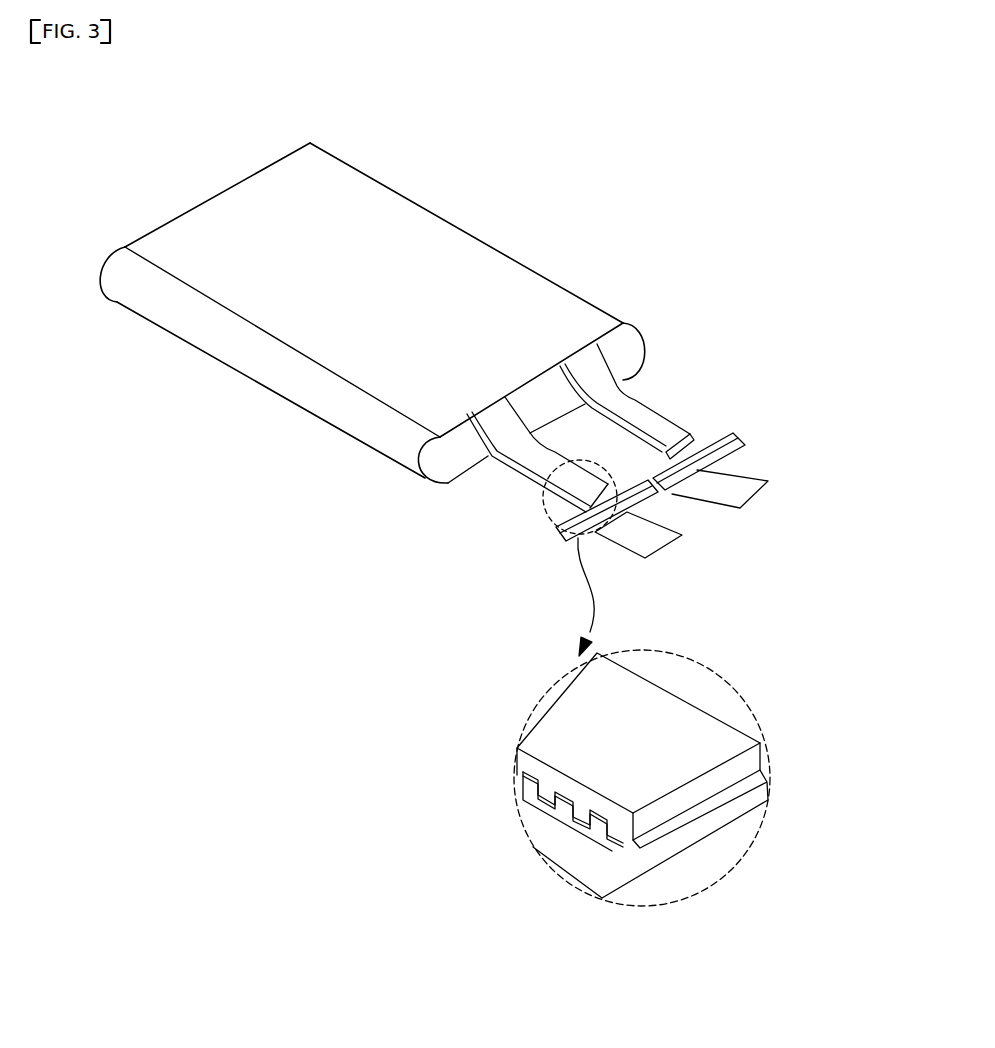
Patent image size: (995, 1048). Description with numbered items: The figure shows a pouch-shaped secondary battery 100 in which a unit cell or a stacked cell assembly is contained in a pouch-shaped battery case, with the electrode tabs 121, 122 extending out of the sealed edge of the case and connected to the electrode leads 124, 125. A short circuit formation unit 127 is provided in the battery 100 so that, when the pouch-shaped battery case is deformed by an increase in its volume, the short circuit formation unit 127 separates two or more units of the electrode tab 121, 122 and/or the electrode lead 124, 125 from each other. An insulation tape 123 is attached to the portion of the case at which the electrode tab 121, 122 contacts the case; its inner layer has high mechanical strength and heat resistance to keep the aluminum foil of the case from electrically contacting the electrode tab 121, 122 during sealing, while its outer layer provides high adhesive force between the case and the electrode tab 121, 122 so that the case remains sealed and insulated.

The pouch-shaped secondary battery 100 is at (500, 238).
The electrode tab 121 is at (612, 386).
The electrode tab 122 is at (523, 463).
The insulation tape 123 is at (728, 447).
The electrode lead 124 is at (749, 466).
The electrode lead 125 is at (620, 532).
The short circuit formation unit 127 is at (548, 492).